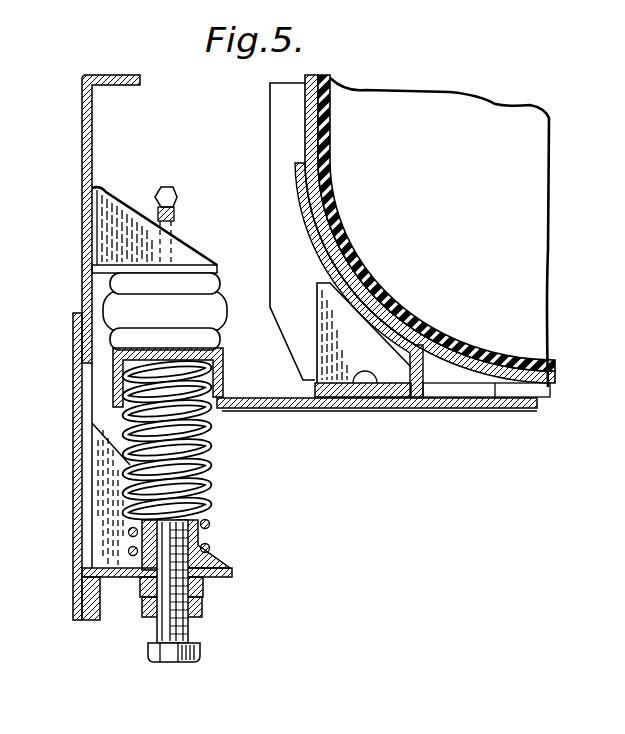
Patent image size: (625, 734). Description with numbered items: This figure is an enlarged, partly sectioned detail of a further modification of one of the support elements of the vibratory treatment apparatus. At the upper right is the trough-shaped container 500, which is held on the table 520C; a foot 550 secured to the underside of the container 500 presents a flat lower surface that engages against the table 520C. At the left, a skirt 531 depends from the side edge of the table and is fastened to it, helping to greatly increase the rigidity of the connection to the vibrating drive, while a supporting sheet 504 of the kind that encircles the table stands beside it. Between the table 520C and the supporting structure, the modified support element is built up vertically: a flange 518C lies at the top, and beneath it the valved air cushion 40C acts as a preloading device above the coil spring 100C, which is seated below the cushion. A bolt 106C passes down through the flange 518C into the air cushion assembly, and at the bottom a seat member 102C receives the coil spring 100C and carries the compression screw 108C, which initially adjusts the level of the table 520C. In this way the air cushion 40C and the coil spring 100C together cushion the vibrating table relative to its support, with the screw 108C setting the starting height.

The trough-shaped container 500 is at (300, 110).
The upper flange 518C is at (112, 208).
The bolt 106C is at (165, 197).
The skirt 531 is at (82, 205).
The valved air cushion 40C is at (218, 303).
The foot 550 is at (357, 356).
The supporting sheet 504 is at (74, 401).
The table 520C is at (443, 410).
The coil spring 100C is at (208, 464).
The spring seat bushing 102C is at (208, 553).
The compression screw 108C is at (172, 631).